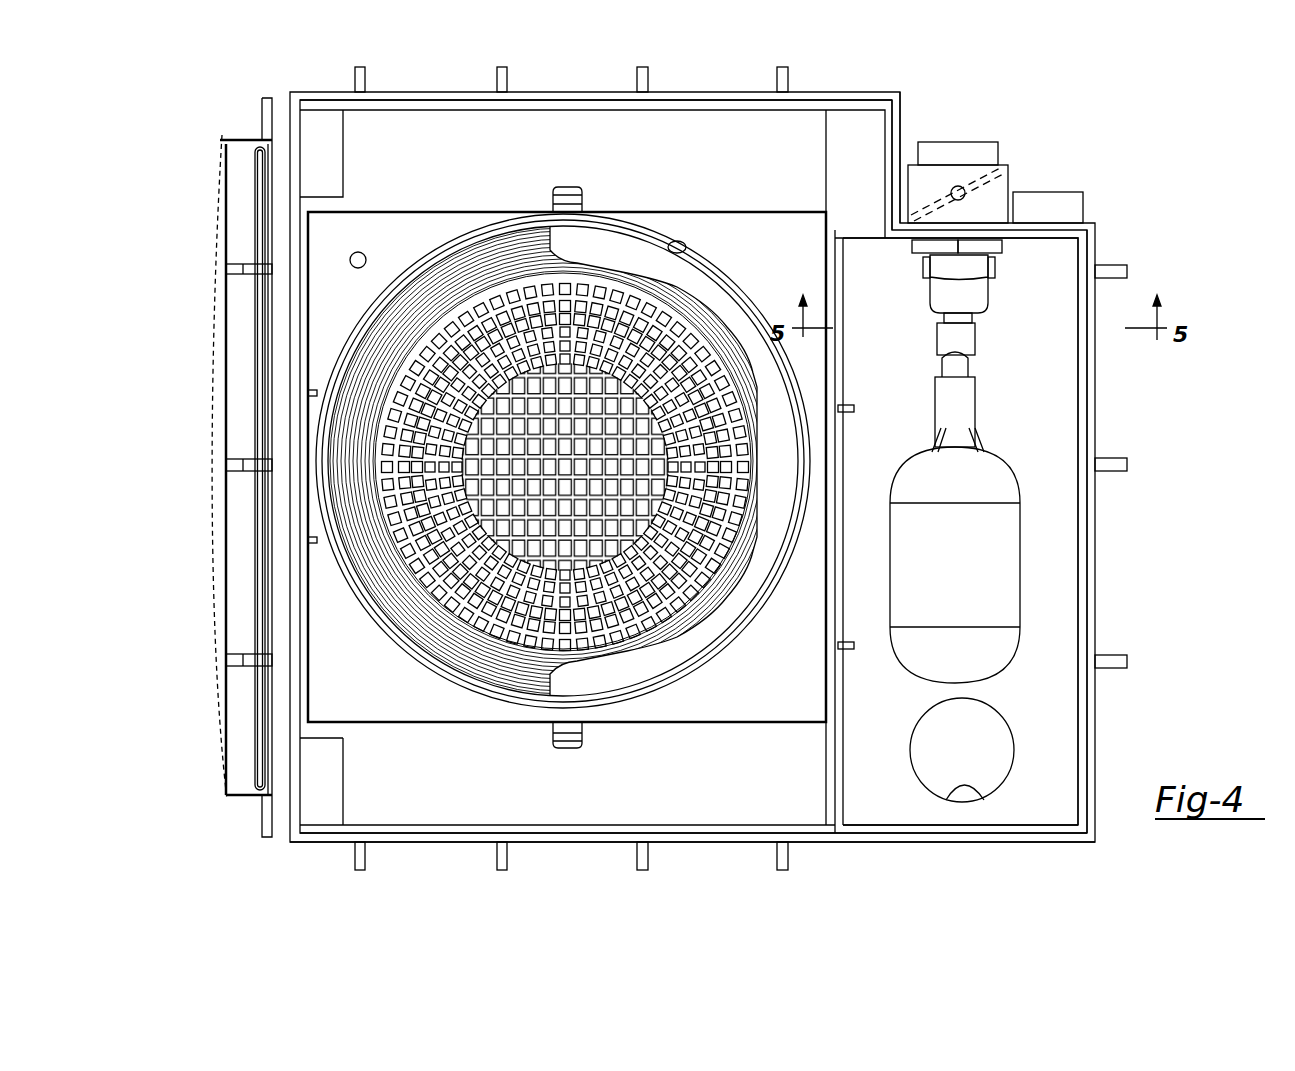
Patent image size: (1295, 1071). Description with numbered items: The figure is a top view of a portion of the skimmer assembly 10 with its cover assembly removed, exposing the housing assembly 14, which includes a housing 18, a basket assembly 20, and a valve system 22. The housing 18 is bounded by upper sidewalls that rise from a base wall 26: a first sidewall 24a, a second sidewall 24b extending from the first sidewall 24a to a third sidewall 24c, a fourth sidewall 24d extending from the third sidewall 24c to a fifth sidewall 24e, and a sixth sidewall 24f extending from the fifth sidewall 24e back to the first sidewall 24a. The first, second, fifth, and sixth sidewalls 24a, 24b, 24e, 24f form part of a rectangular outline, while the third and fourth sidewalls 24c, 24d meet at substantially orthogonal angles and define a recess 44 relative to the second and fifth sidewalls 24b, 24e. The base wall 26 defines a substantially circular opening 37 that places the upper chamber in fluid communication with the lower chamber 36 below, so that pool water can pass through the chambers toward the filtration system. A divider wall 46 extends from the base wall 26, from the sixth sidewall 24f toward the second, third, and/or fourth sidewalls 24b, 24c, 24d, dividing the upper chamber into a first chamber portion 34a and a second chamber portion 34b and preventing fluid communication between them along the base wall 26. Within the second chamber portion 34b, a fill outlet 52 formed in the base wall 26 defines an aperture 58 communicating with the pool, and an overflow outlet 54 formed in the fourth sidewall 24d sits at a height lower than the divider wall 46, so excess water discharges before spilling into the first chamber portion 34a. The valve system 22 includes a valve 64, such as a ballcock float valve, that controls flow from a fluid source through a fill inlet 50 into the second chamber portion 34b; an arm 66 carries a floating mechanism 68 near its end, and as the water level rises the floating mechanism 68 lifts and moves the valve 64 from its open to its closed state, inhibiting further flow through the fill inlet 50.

The skimmer assembly 10 is at (205, 102).
The housing assembly 14 is at (668, 78).
The housing 18 is at (315, 842).
The basket assembly 20 is at (337, 297).
The valve system 22 is at (1027, 578).
The first sidewall 24a is at (268, 775).
The second sidewall 24b is at (380, 98).
The third sidewall 24c is at (893, 133).
The fourth sidewall 24d is at (1050, 228).
The fifth sidewall 24e is at (1090, 410).
The sixth sidewall 24f is at (558, 842).
The base wall 26 is at (873, 808).
The first chamber portion 34a is at (332, 677).
The second chamber portion 34b is at (1052, 650).
The lower chamber 36 is at (414, 452).
The opening 37 is at (680, 250).
The recess 44 is at (1056, 168).
The divider wall 46 is at (832, 760).
The fill inlet 50 is at (918, 152).
The fill outlet 52 is at (1013, 740).
The overflow outlet 54 is at (998, 165).
The aperture 58 is at (967, 785).
The valve 64 is at (960, 186).
The arm 66 is at (967, 363).
The floating mechanism 68 is at (1020, 520).